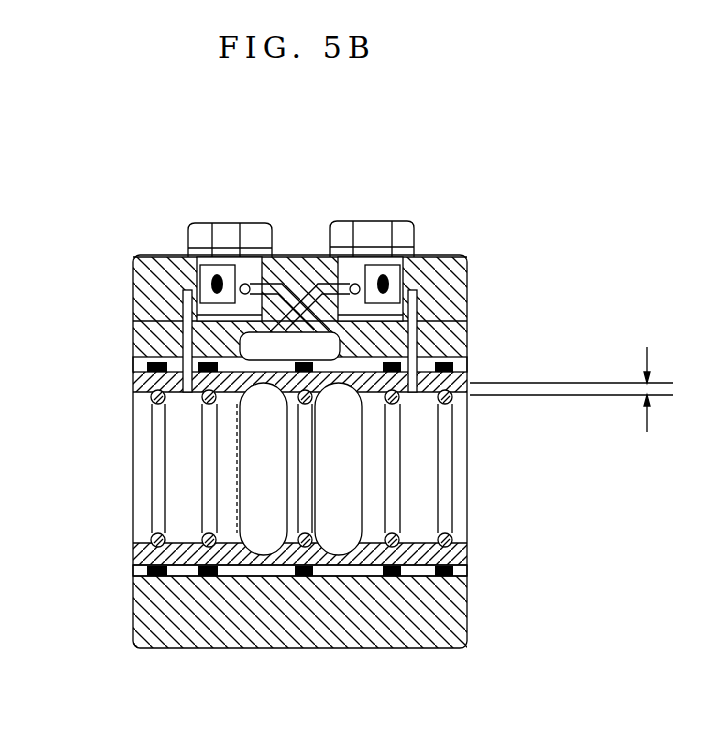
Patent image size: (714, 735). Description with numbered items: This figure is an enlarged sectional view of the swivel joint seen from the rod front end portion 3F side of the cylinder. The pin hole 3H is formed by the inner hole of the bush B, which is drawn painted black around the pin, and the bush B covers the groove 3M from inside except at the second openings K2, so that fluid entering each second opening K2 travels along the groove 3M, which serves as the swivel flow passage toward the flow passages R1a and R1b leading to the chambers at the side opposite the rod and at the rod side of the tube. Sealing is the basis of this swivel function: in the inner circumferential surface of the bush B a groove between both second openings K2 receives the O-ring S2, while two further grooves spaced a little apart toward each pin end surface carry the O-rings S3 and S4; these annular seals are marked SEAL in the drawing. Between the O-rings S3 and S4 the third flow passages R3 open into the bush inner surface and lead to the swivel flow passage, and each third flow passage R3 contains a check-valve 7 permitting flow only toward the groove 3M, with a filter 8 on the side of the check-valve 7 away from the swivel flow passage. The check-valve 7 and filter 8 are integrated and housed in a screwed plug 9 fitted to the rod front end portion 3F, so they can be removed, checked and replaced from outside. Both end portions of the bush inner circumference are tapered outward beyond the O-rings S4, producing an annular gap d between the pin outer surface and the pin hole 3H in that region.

The check-valve 7 is at (249, 300).
The filter 8 is at (170, 257).
The plug 9 is at (197, 222).
The rod front end portion 3F is at (470, 268).
The groove 3M is at (138, 360).
The pin hole 3H is at (455, 457).
The third flow passage R3 is at (290, 290).
The flow passage R1a is at (343, 489).
The flow passage R1b is at (252, 466).
The seal SEAL is at (468, 357).
The bush B is at (468, 383).
The annular gap d is at (648, 406).
The O-ring S2 is at (317, 563).
The O-ring S3 is at (220, 565).
The O-ring S4 is at (168, 568).
The second opening K2 is at (263, 533).